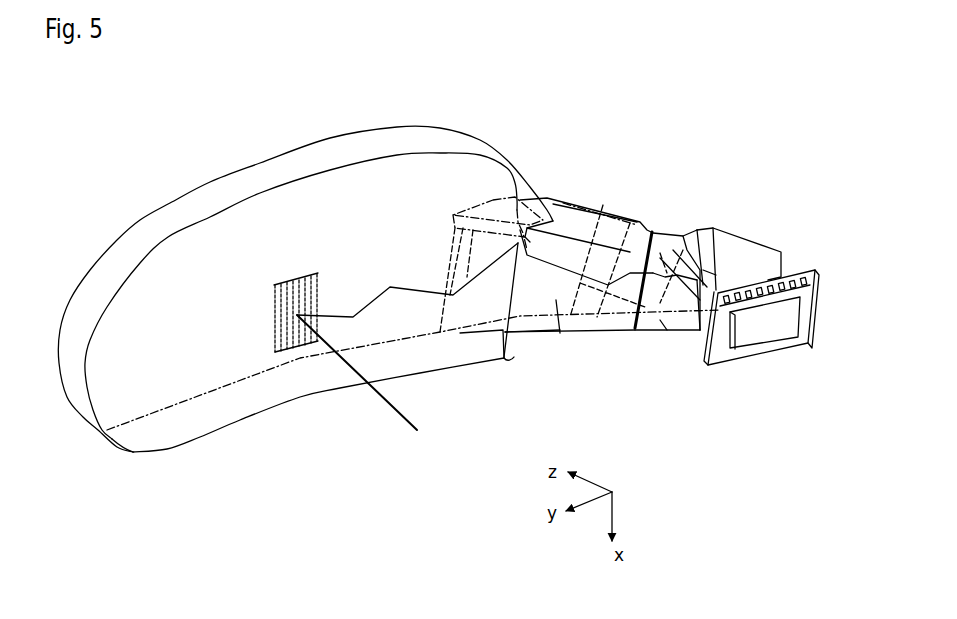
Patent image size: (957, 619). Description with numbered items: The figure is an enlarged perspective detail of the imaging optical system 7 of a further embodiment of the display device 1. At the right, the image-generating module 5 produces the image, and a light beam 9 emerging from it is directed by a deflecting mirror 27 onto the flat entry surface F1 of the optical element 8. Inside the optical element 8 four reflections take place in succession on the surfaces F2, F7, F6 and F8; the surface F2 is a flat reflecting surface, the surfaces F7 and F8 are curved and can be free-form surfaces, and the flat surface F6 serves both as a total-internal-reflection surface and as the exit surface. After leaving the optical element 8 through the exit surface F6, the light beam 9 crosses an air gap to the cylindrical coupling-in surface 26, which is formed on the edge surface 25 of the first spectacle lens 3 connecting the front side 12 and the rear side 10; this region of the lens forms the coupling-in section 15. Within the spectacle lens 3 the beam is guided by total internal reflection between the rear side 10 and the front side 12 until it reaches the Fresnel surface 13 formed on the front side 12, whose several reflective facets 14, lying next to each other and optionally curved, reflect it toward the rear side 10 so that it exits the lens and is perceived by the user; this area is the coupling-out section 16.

The display device 1 is at (389, 283).
The first spectacle lens 3 is at (158, 201).
The front side 12 is at (253, 158).
The edge surface 25 is at (470, 145).
The rear side 10 is at (170, 427).
The coupling-out section 16 is at (263, 330).
The light beam 9 is at (377, 295).
The Fresnel surface 13 is at (281, 357).
The reflective facets 14 is at (303, 337).
The coupling-in section 15 is at (473, 332).
The imaging optical system 7 is at (645, 217).
The surface F8 is at (637, 220).
The surface F6 is at (560, 333).
The optical element 8 is at (635, 333).
The cylindrical coupling-in surface 26 is at (507, 340).
The surface F7 is at (687, 247).
The surface F2 is at (664, 332).
The deflecting mirror 27 is at (758, 267).
The entry surface F1 is at (722, 256).
The image-generating module 5 is at (787, 343).